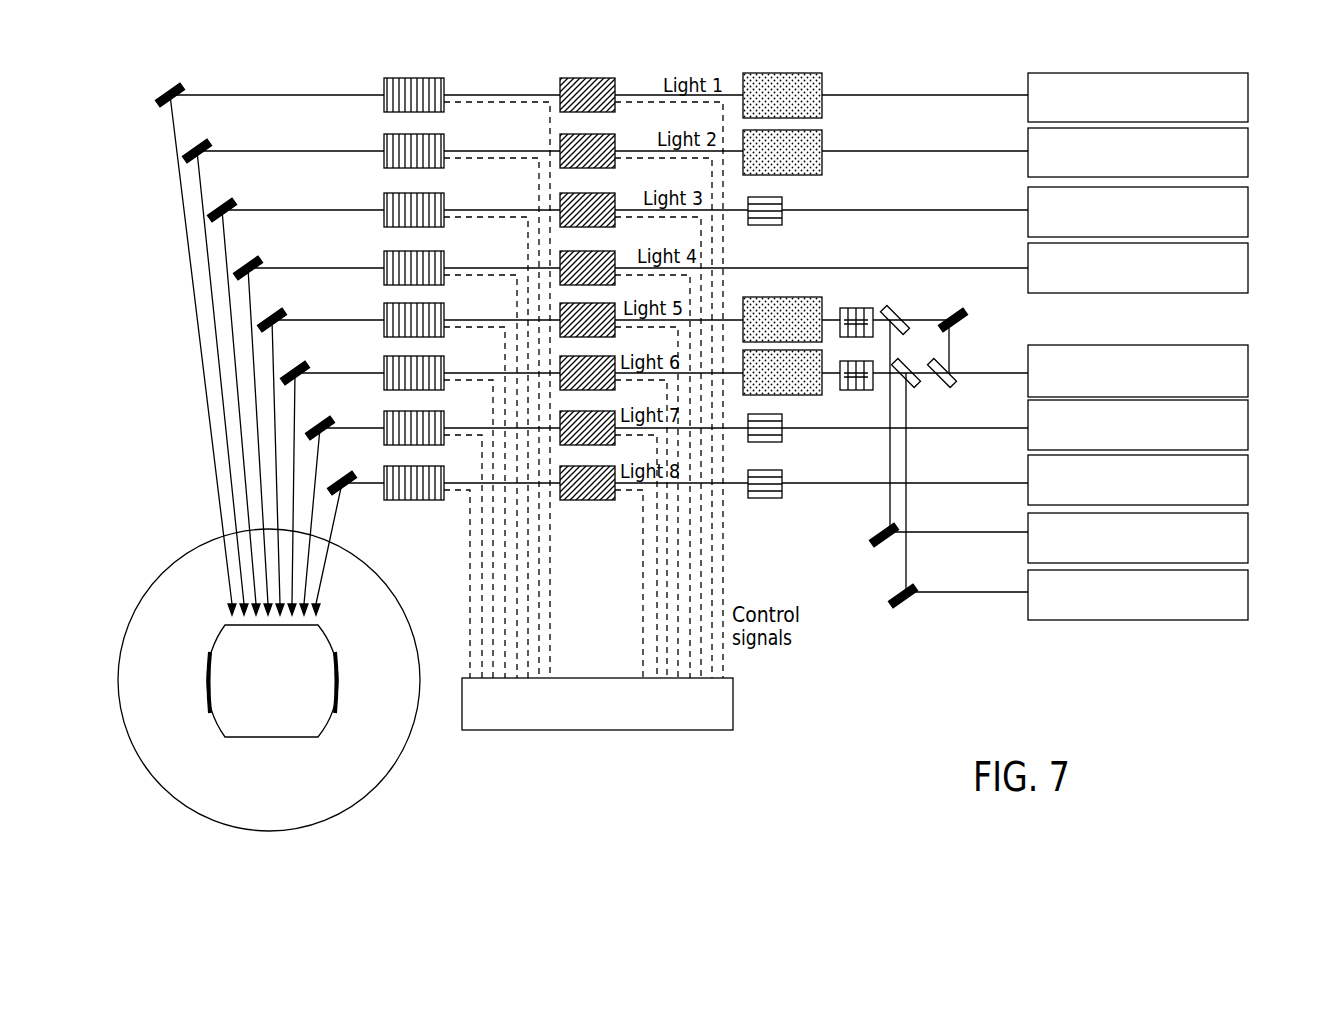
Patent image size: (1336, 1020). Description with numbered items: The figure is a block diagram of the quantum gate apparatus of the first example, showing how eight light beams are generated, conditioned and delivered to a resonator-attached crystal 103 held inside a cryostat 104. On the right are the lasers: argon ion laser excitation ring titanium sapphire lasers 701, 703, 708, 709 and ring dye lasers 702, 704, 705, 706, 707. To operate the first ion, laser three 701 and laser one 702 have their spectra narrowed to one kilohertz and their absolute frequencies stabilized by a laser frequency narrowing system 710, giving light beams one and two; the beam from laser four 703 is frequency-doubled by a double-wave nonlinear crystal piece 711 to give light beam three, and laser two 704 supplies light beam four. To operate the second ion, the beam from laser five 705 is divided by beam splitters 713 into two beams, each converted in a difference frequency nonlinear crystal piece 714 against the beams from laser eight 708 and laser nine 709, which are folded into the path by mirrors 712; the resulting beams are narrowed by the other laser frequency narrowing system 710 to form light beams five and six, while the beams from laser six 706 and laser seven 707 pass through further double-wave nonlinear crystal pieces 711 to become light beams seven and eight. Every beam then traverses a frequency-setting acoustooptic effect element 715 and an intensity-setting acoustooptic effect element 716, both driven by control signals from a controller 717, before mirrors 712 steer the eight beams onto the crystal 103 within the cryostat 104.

The resonator-attached crystal 103 is at (190, 712).
The cryostat 104 is at (405, 748).
The ring titanium sapphire laser (laser 3) 701 is at (1028, 81).
The ring dye laser (laser 1) 702 is at (1028, 141).
The ring titanium sapphire laser (laser 4) 703 is at (1028, 199).
The ring dye laser (laser 2) 704 is at (1028, 262).
The ring dye laser (laser 5) 705 is at (1248, 367).
The ring dye laser (laser 6) 706 is at (1248, 420).
The ring dye laser (laser 7) 707 is at (1248, 477).
The ring titanium sapphire laser (laser 8) 708 is at (1248, 534).
The ring titanium sapphire laser (laser 9) 709 is at (1248, 590).
The laser frequency narrowing system 710 is at (822, 78).
The double-wave nonlinear crystal piece 711 is at (783, 225).
The mirror 712 is at (898, 610).
The beam splitter 713 is at (896, 304).
The difference frequency nonlinear crystal piece 714 is at (840, 308).
The frequency-setting acoustooptic effect element 715 is at (612, 112).
The intensity-setting acoustooptic effect element 716 is at (445, 112).
The controller 717 is at (733, 700).